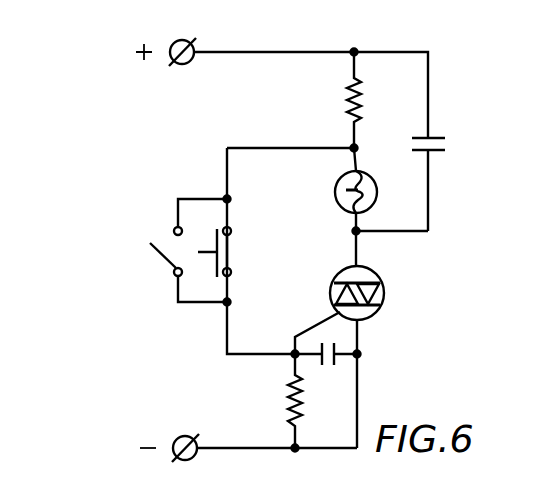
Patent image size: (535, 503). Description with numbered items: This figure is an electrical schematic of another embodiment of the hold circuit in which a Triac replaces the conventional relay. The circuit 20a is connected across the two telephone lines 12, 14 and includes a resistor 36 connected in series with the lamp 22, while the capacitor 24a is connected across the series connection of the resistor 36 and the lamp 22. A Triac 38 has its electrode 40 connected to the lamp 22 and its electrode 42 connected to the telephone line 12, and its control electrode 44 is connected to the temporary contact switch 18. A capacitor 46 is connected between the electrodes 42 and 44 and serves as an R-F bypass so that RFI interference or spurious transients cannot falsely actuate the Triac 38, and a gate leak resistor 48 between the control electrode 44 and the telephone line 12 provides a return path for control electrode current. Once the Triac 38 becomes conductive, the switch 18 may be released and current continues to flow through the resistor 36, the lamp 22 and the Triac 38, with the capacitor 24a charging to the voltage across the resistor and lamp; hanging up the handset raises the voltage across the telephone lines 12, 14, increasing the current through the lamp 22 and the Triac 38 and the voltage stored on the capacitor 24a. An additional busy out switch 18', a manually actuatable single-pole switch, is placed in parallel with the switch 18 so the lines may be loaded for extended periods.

The telephone line 12 is at (184, 436).
The telephone line 14 is at (179, 42).
The switch 18 is at (179, 238).
The busy out switch 18' is at (171, 277).
The circuit 20a is at (465, 73).
The lamp 22 is at (336, 195).
The capacitor 24a is at (449, 151).
The resistor 36 is at (346, 97).
The Triac 38 is at (401, 297).
The electrode 40 is at (360, 250).
The electrode 42 is at (361, 341).
The control electrode 44 is at (318, 324).
The capacitor 46 is at (326, 368).
The gate leak resistor 48 is at (292, 402).